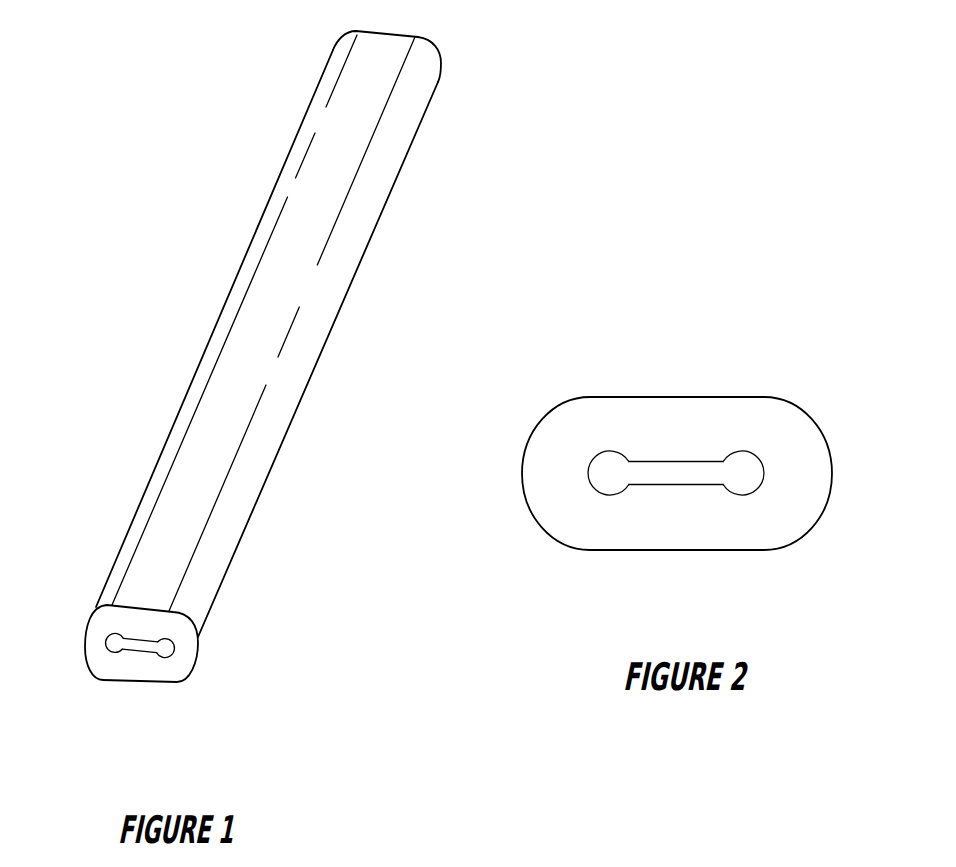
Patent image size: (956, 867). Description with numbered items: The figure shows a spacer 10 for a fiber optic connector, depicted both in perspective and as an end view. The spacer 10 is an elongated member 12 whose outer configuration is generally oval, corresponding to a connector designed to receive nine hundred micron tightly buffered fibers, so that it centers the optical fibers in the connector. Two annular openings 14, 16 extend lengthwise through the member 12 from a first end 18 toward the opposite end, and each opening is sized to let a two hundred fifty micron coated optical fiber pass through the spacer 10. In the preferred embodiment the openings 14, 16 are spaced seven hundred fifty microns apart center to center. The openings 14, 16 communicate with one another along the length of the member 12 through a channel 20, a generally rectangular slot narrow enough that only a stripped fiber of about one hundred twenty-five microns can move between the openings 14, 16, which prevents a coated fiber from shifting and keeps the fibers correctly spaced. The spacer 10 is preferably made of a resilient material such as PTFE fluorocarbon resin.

In FIG. 1, the spacer 10 is at (264, 385).
In FIG. 2, the spacer 10 is at (676, 460).
In FIG. 1, the elongated member 12 is at (250, 498).
In FIG. 1, the annular opening 14 is at (112, 643).
In FIG. 2, the annular opening 14 is at (610, 483).
In FIG. 1, the annular opening 16 is at (168, 650).
In FIG. 2, the annular opening 16 is at (747, 482).
In FIG. 1, the first end 18 is at (102, 668).
In FIG. 2, the first end 18 is at (540, 483).
In FIG. 1, the channel 20 is at (138, 647).
In FIG. 2, the channel 20 is at (683, 475).